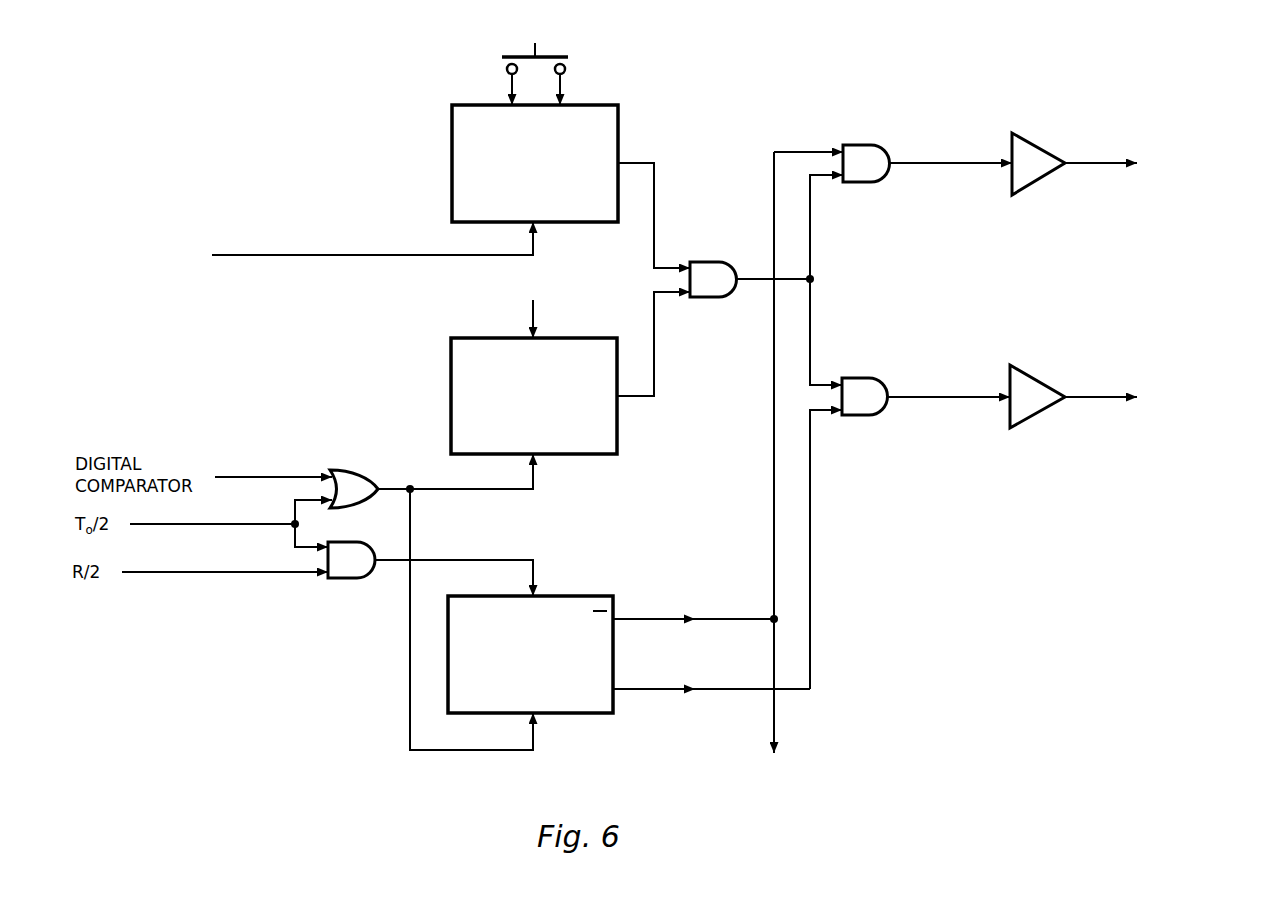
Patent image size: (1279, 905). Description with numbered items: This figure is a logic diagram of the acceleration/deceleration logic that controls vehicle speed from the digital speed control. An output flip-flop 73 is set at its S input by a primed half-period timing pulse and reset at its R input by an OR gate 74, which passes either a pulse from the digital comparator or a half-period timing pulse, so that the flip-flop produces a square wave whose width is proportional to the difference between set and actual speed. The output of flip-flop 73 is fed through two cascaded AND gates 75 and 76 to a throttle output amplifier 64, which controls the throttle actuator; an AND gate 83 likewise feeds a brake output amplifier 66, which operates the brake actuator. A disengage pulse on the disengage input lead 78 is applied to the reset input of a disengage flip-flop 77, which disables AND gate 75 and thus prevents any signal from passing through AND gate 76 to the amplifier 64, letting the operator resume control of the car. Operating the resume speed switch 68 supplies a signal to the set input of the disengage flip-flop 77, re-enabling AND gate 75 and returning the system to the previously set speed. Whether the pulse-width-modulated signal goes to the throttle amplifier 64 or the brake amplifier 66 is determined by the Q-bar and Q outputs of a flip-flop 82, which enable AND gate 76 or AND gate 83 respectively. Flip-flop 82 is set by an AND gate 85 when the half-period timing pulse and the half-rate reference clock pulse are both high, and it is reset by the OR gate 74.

The resume speed switch 68 is at (507, 56).
The disengage flip-flop 77 is at (452, 160).
The disengage input lead 78 is at (317, 255).
The AND gate 75 is at (708, 262).
The AND gate 76 is at (862, 150).
The throttle output amplifier 64 is at (1032, 155).
The output flip-flop 73 is at (451, 396).
The AND gate 83 is at (860, 385).
The brake output amplifier 66 is at (1033, 388).
The OR gate 74 is at (350, 477).
The AND gate 85 is at (345, 578).
The flip-flop 82 is at (580, 713).